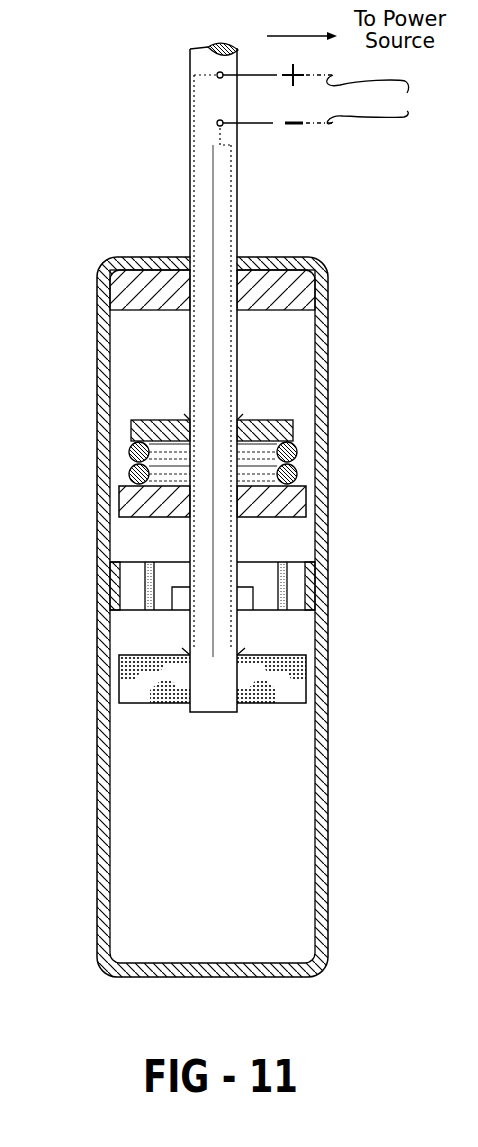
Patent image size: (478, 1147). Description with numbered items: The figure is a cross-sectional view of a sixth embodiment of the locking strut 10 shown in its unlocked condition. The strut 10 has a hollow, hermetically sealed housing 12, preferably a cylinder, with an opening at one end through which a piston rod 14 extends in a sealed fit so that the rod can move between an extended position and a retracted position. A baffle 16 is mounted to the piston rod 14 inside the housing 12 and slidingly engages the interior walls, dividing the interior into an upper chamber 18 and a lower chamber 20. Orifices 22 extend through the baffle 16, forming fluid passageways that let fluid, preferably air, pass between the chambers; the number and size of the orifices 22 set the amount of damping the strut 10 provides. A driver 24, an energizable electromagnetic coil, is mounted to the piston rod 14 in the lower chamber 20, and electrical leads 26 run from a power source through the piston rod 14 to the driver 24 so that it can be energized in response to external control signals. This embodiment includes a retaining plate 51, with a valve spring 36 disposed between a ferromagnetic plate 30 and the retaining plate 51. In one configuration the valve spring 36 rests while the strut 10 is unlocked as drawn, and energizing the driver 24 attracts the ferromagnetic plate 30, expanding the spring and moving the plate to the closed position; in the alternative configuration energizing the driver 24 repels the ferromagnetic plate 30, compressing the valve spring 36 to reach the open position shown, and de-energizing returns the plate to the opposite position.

The locking strut 10 is at (100, 166).
The housing 12 is at (97, 333).
The piston rod 14 is at (203, 193).
The baffle 16 is at (300, 596).
The upper chamber 18 is at (283, 346).
The lower chamber 20 is at (292, 867).
The orifice 22 is at (298, 573).
The driver 24 is at (288, 672).
The electrical leads 26 is at (306, 104).
The ferromagnetic plate 30 is at (297, 503).
The valve spring 36 is at (295, 450).
The retaining plate 51 is at (288, 428).